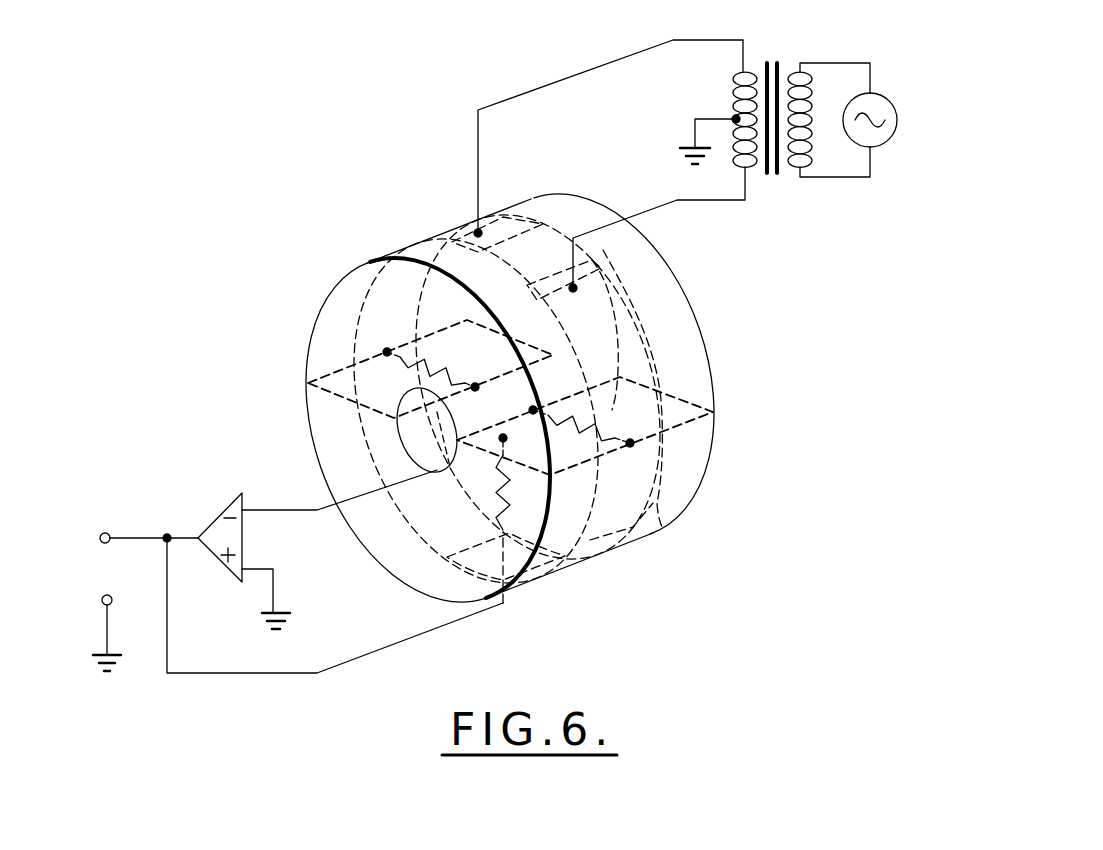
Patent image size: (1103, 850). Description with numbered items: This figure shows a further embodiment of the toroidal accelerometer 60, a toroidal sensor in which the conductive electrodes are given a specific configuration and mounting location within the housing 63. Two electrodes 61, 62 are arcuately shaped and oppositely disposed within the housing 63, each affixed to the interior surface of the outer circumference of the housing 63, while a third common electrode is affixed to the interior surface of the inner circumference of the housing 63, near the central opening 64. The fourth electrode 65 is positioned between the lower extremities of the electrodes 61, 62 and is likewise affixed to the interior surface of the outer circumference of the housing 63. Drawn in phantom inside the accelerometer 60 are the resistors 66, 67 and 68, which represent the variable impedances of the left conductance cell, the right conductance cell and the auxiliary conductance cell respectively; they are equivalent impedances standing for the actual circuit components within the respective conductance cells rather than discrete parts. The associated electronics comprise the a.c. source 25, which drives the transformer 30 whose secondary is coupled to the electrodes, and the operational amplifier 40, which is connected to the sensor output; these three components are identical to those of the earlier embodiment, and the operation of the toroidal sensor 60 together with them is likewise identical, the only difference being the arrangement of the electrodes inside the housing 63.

The a.c. source 25 is at (891, 101).
The transformer 30 is at (790, 52).
The operational amplifier 40 is at (222, 514).
The toroidal accelerometer 60 is at (388, 233).
The electrode 61 is at (449, 240).
The electrode 62 is at (663, 530).
The housing 63 is at (313, 311).
The central aperture 64 is at (432, 444).
The fourth electrode 65 is at (447, 558).
The resistor 66 is at (405, 378).
The resistor 67 is at (585, 426).
The resistor 68 is at (497, 483).